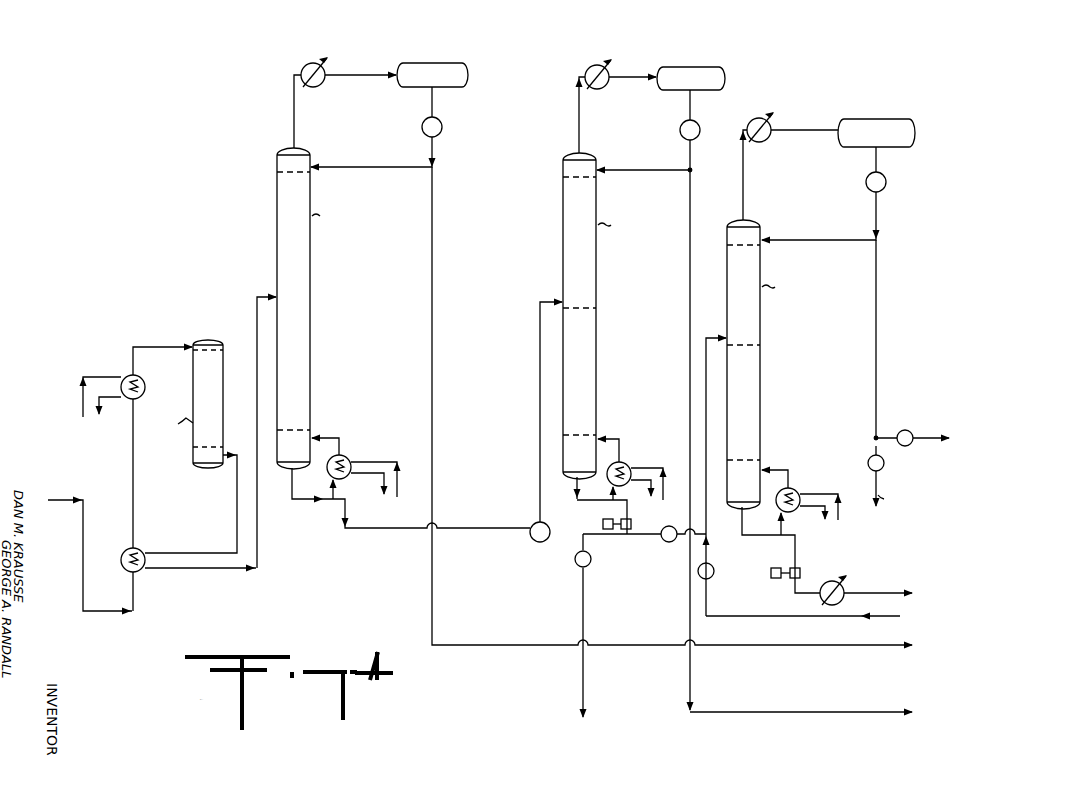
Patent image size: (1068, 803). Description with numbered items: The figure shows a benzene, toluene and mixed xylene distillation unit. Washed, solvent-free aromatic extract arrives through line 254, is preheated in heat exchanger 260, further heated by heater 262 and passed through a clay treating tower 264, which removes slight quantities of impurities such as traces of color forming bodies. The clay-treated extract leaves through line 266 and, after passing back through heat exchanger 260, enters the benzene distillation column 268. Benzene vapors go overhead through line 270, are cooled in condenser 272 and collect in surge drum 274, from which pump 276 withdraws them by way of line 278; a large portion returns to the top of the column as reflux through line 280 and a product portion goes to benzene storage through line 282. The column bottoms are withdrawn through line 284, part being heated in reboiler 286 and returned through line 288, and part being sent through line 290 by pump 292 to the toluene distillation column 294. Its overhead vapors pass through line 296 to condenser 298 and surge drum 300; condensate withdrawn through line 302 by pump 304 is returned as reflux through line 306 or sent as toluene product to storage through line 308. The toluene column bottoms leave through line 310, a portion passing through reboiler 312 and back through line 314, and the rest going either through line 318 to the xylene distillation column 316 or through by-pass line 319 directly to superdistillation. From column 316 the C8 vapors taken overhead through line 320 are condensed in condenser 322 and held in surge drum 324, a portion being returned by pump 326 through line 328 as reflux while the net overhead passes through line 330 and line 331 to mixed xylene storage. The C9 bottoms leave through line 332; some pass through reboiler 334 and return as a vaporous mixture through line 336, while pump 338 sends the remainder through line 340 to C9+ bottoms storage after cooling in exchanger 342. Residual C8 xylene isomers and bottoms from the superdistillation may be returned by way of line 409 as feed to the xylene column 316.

The line 254 is at (82, 518).
The heat exchanger 260 is at (146, 539).
The heater 262 is at (144, 371).
The clay treating tower 264 is at (200, 337).
The line 266 is at (257, 302).
The benzene distillation column 268 is at (277, 182).
The line 270 is at (294, 100).
The condenser 272 is at (305, 62).
The surge drum 274 is at (412, 61).
The pump 276 is at (442, 124).
The line 278 is at (435, 102).
The line 280 is at (411, 162).
The line 282 is at (429, 325).
The line 284 is at (302, 504).
The reboiler 286 is at (351, 449).
The line 288 is at (339, 427).
The line 290 is at (451, 529).
The pump 292 is at (536, 526).
The toluene distillation column 294 is at (558, 207).
The line 296 is at (577, 124).
The condenser 298 is at (579, 68).
The surge drum 300 is at (690, 65).
The line 302 is at (692, 106).
The pump 304 is at (695, 138).
The line 306 is at (656, 166).
The line 308 is at (689, 300).
The line 310 is at (590, 509).
The reboiler 312 is at (631, 454).
The line 314 is at (616, 429).
The xylene distillation column 316 is at (728, 273).
The line 318 is at (661, 543).
The by-pass line 319 is at (650, 636).
The line 320 is at (745, 170).
The condenser 322 is at (767, 140).
The surge drum 324 is at (858, 113).
The pump 326 is at (881, 193).
The line 328 is at (814, 240).
The line 330 is at (876, 328).
The line 331 is at (869, 443).
The line 332 is at (757, 542).
The reboiler 334 is at (799, 482).
The line 336 is at (779, 459).
The pump 338 is at (799, 557).
The line 340 is at (886, 589).
The exchanger 342 is at (821, 602).
The line 409 is at (847, 601).